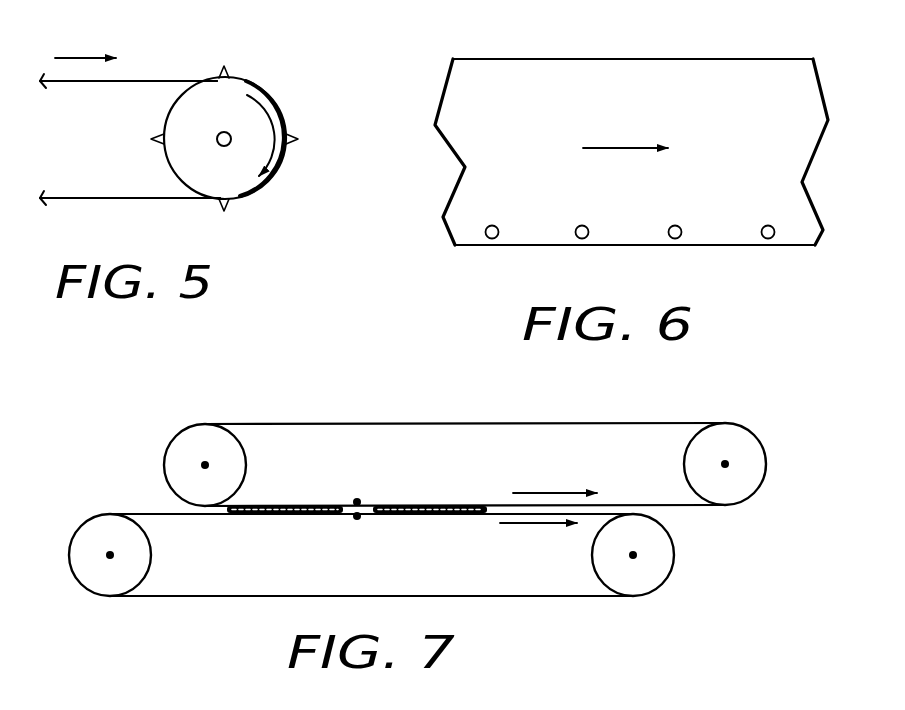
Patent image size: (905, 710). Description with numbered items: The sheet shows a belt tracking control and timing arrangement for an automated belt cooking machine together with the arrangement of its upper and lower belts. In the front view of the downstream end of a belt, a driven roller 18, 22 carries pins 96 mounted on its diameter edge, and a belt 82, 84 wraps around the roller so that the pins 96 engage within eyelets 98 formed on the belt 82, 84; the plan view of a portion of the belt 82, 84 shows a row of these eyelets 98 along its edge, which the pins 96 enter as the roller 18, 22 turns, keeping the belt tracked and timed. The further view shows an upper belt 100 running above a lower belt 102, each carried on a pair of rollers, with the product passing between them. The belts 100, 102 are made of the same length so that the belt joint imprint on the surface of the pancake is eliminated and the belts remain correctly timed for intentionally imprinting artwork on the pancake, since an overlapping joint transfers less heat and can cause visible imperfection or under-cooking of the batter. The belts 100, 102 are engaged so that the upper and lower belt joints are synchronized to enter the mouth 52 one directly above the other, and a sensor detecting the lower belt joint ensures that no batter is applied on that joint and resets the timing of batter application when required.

In FIG. 5, the driven roller 18 is at (141, 156).
In FIG. 5, the driven roller 22 is at (172, 181).
In FIG. 5, the belt 82 is at (288, 110).
In FIG. 5, the belt 84 is at (200, 78).
In FIG. 5, the pins 96 is at (297, 141).
In FIG. 5, the eyelets 98 is at (125, 81).
In FIG. 6, the eyelets 98 is at (575, 234).
In FIG. 7, the mouth 52 is at (165, 503).
In FIG. 7, the upper belt 100 is at (368, 424).
In FIG. 7, the lower belt 102 is at (570, 597).